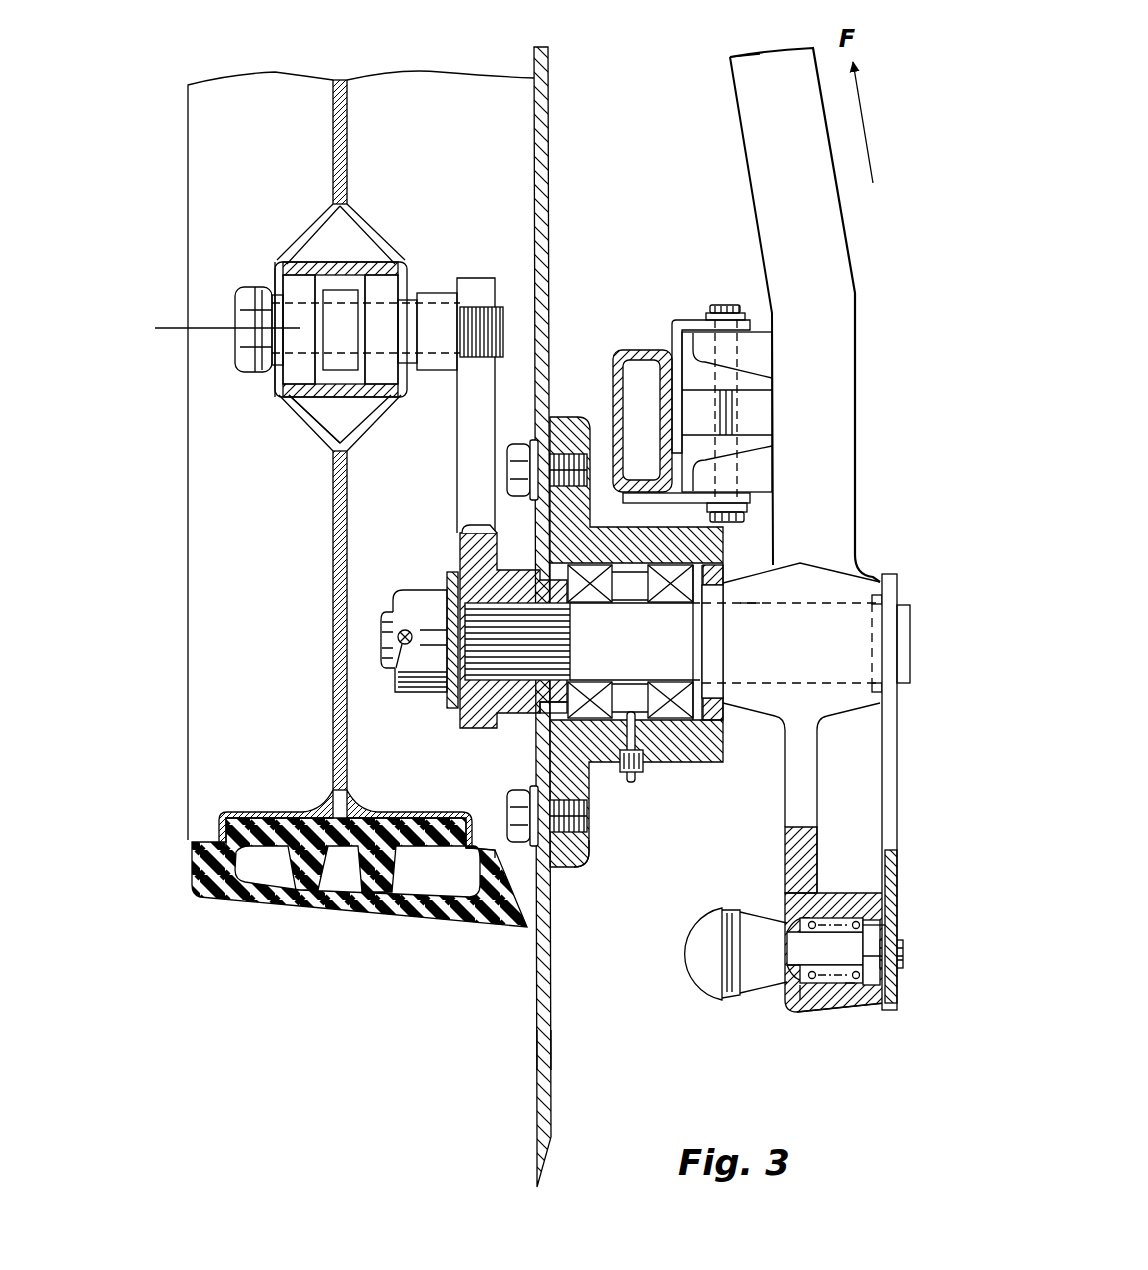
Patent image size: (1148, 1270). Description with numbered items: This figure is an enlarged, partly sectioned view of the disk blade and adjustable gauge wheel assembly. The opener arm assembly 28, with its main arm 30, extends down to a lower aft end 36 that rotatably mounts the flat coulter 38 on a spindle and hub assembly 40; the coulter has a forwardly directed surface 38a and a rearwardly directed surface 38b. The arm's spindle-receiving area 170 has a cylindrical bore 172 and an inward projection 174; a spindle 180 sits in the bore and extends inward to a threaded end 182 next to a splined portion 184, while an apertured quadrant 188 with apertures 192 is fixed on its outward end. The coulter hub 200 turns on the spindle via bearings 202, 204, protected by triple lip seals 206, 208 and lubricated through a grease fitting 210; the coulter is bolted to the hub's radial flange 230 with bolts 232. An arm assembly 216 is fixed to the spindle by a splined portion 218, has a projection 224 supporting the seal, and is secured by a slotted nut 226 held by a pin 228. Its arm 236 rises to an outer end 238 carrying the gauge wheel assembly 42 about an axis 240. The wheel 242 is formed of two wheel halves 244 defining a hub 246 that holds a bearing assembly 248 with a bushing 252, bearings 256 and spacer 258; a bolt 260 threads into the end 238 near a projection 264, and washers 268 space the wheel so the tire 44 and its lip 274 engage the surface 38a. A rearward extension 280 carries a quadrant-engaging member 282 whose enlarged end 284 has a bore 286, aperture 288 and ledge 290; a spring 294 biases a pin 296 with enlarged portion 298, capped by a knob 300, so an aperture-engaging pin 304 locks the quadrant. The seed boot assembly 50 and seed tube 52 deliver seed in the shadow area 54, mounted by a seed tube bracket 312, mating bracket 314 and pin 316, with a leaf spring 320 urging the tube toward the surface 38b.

The opener arm assembly 28 is at (692, 50).
The main arm 30 is at (742, 105).
The lower aft end 36 is at (855, 410).
The coulter 38 is at (537, 1176).
The forwardly directed blade surface 38a is at (537, 1053).
The rearwardly directed blade surface 38b is at (551, 1053).
The spindle and hub assembly 40 is at (656, 824).
The gauge wheel assembly 42 is at (345, 962).
The tire 44 is at (285, 925).
The seed boot assembly 50 is at (623, 313).
The seed tube 52 is at (613, 353).
The shadow area 54 is at (578, 892).
The spindle-receiving area 170 is at (818, 568).
The cylindrical bore 172 is at (780, 610).
The projection 174 is at (718, 690).
The spindle 180 is at (905, 620).
The threaded end 182 is at (440, 625).
The splined portion 184 is at (495, 645).
The quadrant 188 is at (882, 741).
The apertures 192 is at (874, 922).
The coulter hub 200 is at (589, 790).
The bearing 202 is at (670, 597).
The bearing 204 is at (588, 690).
The triple lip seal 206 is at (577, 602).
The triple lip seal 208 is at (712, 587).
The grease fitting 210 is at (640, 776).
The arm assembly 216 is at (445, 473).
The splined portion 218 is at (510, 560).
The projection 224 is at (545, 700).
The slotted nut 226 is at (410, 592).
The pin 228 is at (400, 670).
The radial flange 230 is at (590, 848).
The bolts 232 is at (507, 463).
The arm 236 is at (457, 417).
The radially outwardmost end 238 is at (481, 278).
The axis 240 is at (200, 332).
The wheel 242 is at (308, 713).
The wheel halves 244 is at (350, 494).
The wheel hub 246 is at (270, 403).
The bearing assembly 248 is at (335, 400).
The bushing 252 is at (352, 290).
The bearings 256 is at (295, 290).
The spacer 258 is at (330, 290).
The bolt 260 is at (240, 360).
The projection 264 is at (432, 372).
The washers 268 is at (410, 297).
The lip 274 is at (530, 930).
The rearward extension 280 is at (785, 855).
The quadrant-engaging member 282 is at (773, 1022).
The enlarged end 284 is at (835, 1008).
The cylindrical bore 286 is at (850, 985).
The aperture 288 is at (800, 968).
The ledge portion 290 is at (800, 1000).
The spring 294 is at (833, 920).
The pin 296 is at (805, 950).
The enlarged portion 298 is at (878, 985).
The knob 300 is at (680, 960).
The aperture-engaging pin 304 is at (904, 870).
The seed tube bracket 312 is at (683, 330).
The mating bracket 314 is at (763, 348).
The pin 316 is at (727, 305).
The leaf spring 320 is at (752, 410).